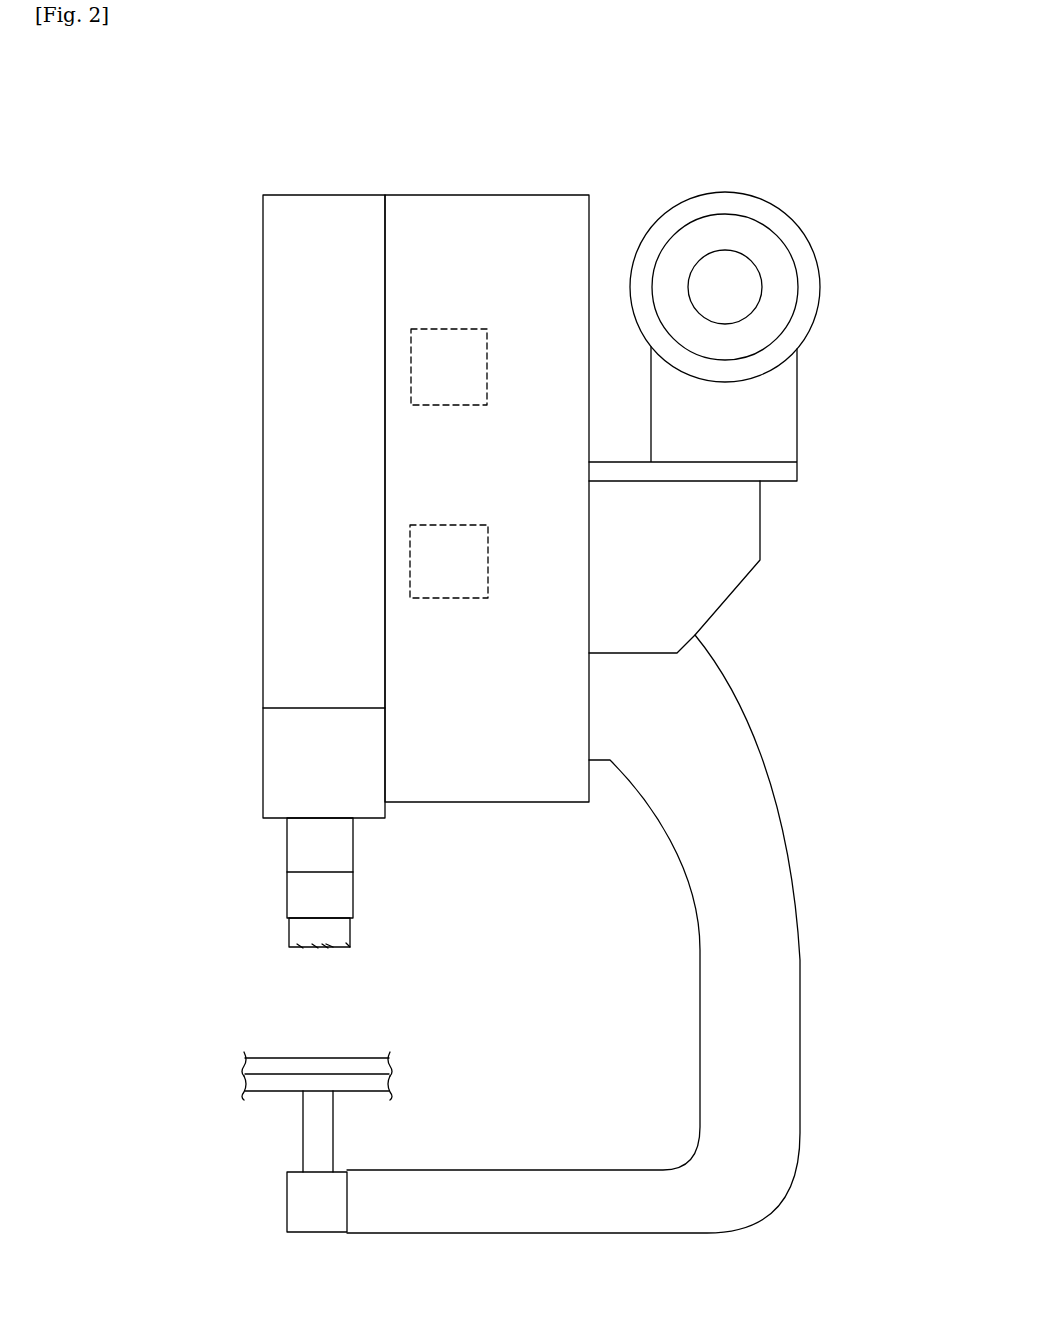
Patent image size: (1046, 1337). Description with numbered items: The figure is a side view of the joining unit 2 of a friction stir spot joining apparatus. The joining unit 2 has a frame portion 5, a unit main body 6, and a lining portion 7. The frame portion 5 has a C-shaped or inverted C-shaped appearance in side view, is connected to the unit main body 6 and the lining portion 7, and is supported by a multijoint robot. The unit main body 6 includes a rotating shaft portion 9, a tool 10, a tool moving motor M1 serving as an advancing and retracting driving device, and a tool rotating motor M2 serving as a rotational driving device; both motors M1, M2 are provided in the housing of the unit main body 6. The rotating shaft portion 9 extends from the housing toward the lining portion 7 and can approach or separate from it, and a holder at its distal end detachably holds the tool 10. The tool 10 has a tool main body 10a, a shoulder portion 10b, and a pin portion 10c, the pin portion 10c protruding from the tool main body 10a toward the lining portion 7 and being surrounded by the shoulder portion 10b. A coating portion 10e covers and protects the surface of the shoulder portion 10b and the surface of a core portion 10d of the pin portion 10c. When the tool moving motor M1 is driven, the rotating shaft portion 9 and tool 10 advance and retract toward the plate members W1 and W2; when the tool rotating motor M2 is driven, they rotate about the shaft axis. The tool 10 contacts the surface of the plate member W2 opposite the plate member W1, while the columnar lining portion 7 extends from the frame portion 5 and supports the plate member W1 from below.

The joining unit 2 is at (421, 148).
The frame portion 5 is at (802, 1023).
The unit main body 6 is at (263, 567).
The lining portion 7 is at (303, 1145).
The rotating shaft portion 9 is at (287, 858).
The tool 10 is at (287, 940).
The tool main body 10a is at (350, 937).
The shoulder portion 10b is at (300, 949).
The pin portion 10c is at (315, 949).
The core portion 10d is at (325, 949).
The coating portion 10e is at (330, 948).
The tool moving motor M1 is at (449, 329).
The tool rotating motor M2 is at (489, 561).
The plate member W1 is at (389, 1084).
The plate member W2 is at (389, 1068).